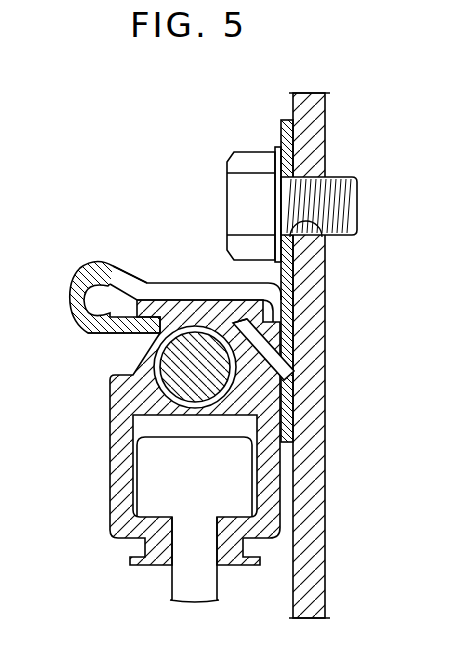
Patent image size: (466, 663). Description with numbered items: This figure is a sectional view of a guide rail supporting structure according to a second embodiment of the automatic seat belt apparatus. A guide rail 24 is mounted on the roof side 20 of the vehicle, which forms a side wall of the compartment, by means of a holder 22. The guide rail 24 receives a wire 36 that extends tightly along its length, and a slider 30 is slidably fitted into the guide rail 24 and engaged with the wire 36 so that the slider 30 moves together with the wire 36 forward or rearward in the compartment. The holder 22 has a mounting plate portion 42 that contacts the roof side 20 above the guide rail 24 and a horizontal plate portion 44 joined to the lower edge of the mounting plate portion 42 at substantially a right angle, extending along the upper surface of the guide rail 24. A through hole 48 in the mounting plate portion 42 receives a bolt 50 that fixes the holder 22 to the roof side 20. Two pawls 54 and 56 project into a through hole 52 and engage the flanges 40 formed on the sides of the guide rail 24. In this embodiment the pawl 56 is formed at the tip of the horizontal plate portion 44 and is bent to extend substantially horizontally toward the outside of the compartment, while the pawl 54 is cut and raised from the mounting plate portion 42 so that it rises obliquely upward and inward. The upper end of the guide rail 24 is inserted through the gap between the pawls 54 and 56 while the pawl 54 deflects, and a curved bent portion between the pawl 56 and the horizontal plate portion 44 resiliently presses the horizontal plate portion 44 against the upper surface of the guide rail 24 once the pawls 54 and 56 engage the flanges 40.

The roof side 20 is at (308, 112).
The holder 22 is at (108, 222).
The guide rail 24 is at (110, 440).
The slider 30 is at (180, 583).
The wire 36 is at (223, 375).
The flange 40 is at (117, 288).
The mounting plate portion 42 is at (287, 137).
The horizontal plate portion 44 is at (188, 283).
The through hole 48 is at (328, 236).
The bolt 50 is at (240, 192).
The through hole 52 is at (97, 264).
The pawl 54 is at (268, 347).
The pawl 56 is at (102, 333).